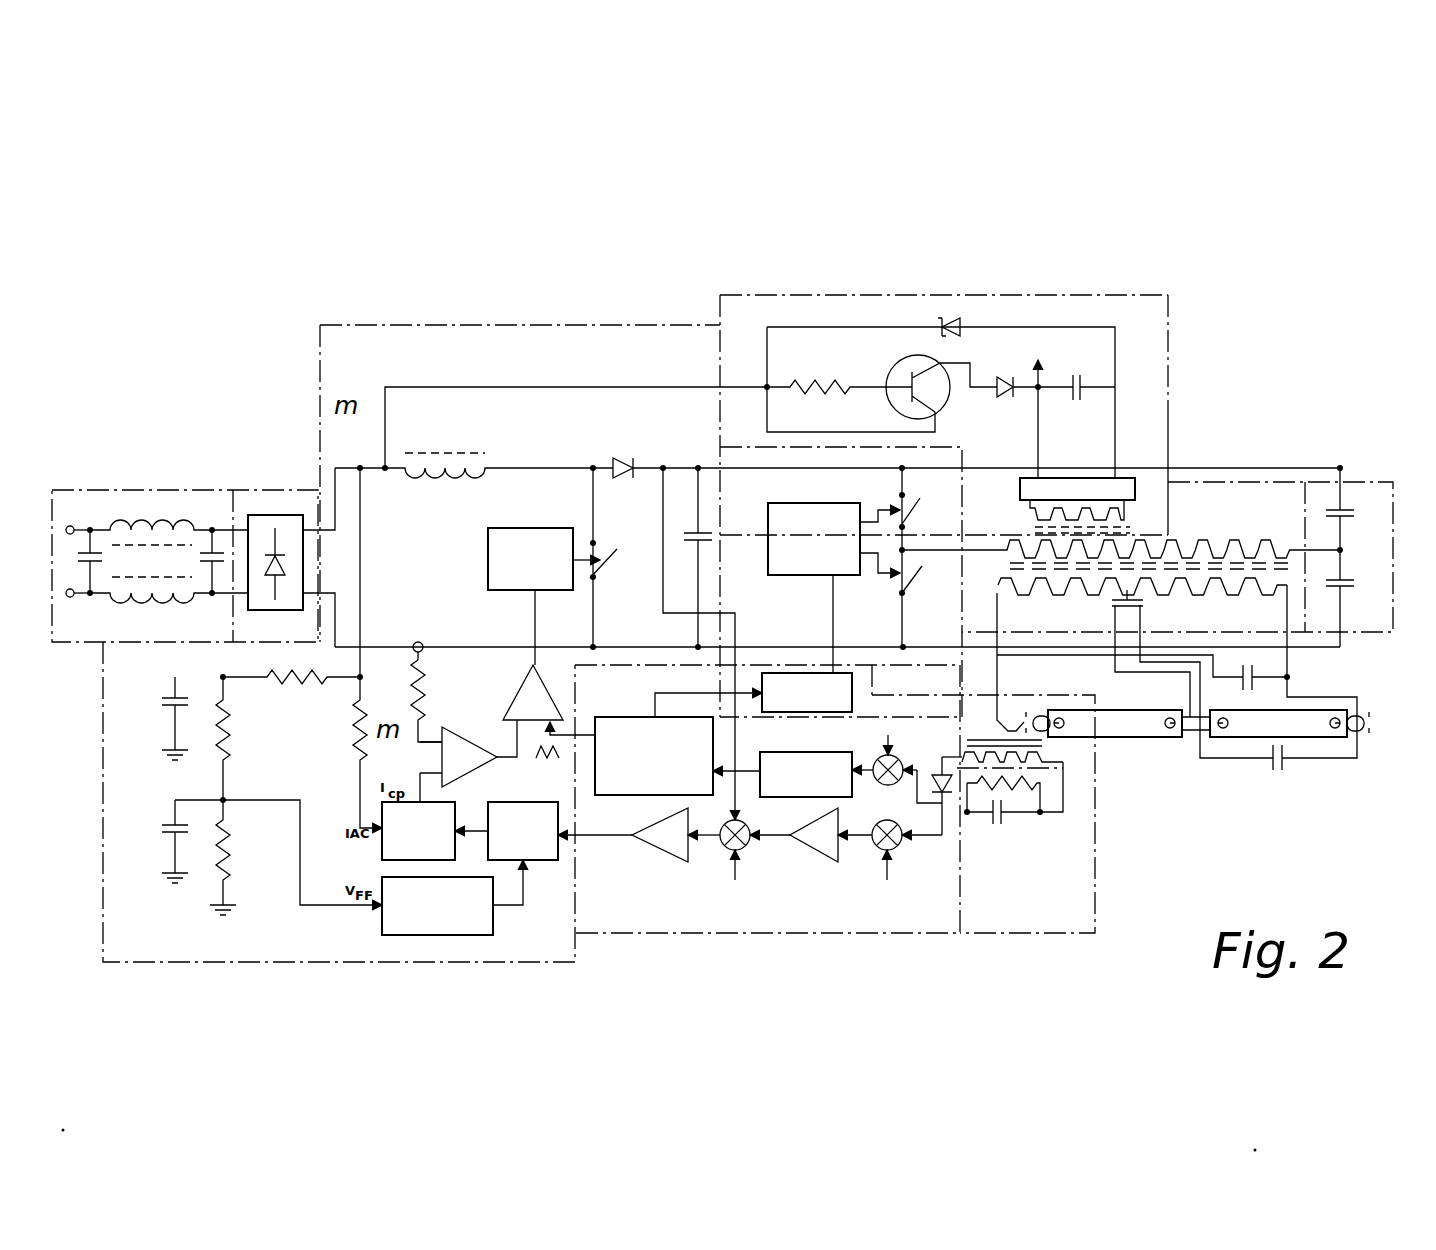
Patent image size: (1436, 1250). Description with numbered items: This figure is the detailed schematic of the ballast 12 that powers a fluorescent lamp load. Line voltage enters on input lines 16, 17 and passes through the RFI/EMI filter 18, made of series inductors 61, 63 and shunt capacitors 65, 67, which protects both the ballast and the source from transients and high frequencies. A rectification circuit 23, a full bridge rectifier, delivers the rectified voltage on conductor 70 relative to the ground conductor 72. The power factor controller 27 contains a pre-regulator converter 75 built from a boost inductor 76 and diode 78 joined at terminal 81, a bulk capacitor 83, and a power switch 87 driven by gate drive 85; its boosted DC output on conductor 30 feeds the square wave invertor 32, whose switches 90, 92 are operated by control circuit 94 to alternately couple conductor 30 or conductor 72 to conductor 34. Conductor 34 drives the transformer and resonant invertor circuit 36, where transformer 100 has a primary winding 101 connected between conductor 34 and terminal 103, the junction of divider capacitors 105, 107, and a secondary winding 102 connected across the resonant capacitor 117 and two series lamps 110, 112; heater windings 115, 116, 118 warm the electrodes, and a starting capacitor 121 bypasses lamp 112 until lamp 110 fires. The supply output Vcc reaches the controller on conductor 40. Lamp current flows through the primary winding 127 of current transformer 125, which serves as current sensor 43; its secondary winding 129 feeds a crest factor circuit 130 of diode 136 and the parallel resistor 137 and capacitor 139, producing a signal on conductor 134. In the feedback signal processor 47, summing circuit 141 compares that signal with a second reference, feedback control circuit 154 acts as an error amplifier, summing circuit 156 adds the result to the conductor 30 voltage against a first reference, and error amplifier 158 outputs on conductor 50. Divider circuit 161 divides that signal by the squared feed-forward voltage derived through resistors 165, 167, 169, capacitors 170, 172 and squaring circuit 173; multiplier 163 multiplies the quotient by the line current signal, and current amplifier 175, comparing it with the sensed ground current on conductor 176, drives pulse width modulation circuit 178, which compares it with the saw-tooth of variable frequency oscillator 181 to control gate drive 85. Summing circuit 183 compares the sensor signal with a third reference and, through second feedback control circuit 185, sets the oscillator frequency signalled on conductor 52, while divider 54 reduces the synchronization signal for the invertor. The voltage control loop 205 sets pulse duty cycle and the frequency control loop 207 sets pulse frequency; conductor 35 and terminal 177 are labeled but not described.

The ballast 12 is at (997, 286).
The input line 16 is at (80, 525).
The input line 17 is at (85, 605).
The filter 18 is at (140, 490).
The rectification circuit 23 is at (282, 515).
The power factor controller 27 is at (615, 325).
The conductor 30 is at (775, 470).
The square wave invertor 32 is at (950, 448).
The conductor 34 is at (918, 552).
The supply bus 35 is at (1170, 400).
The transformer and resonant invertor circuit 36 is at (1228, 482).
The conductor 40 is at (1043, 378).
The current sensor 43 is at (1085, 783).
The feedback signal processor 47 is at (1100, 846).
The conductor 50 is at (585, 838).
The conductor 52 is at (578, 722).
The divider 54 is at (794, 672).
The inductor 61 is at (150, 524).
The inductor 63 is at (170, 600).
The capacitor 65 is at (95, 568).
The capacitor 67 is at (215, 545).
The conductor 70 is at (338, 478).
The conductor 72 is at (382, 646).
The pre-regulator converter 75 is at (540, 428).
The inductor 76 is at (438, 478).
The diode 78 is at (636, 466).
The common terminal 81 is at (593, 467).
The bulk capacitor 83 is at (684, 537).
The gate drive 85 is at (488, 560).
The power switch 87 is at (610, 576).
The switch 90 is at (920, 512).
The switch 92 is at (924, 584).
The control circuit 94 is at (770, 528).
The transformer 100 is at (1185, 545).
The primary winding 101 is at (1200, 553).
The secondary winding 102 is at (1084, 590).
The terminal 103 is at (1344, 550).
The capacitor 105 is at (1346, 508).
The capacitor 107 is at (1346, 592).
The lamp 110 is at (1172, 710).
The lamp 112 is at (1250, 738).
The electrode heater winding 115 is at (1142, 608).
The electrode heater winding 116 is at (1037, 716).
The resonant capacitor 117 is at (1282, 664).
The electrode heater winding 118 is at (1372, 715).
The starting capacitor 121 is at (1288, 766).
The current transformer 125 is at (1050, 740).
The primary winding 127 is at (1000, 728).
The secondary winding 129 is at (963, 758).
The crest factor circuit 130 is at (990, 845).
The conductor 134 is at (917, 804).
The diode 136 is at (950, 800).
The resistor 137 is at (1035, 815).
The capacitor 139 is at (1005, 830).
The summing circuit 141 is at (906, 842).
The feedback control circuit 154 is at (798, 848).
The summing circuit 156 is at (726, 856).
The error amplifier 158 is at (660, 860).
The divider circuit 161 is at (543, 862).
The multiplier 163 is at (460, 805).
The resistor 165 is at (233, 840).
The resistor 167 is at (232, 738).
The resistor 169 is at (292, 686).
The capacitor 170 is at (165, 712).
The capacitor 172 is at (165, 848).
The squaring circuit 173 is at (382, 934).
The current amplifier 175 is at (352, 745).
The conductor 176 is at (410, 700).
The sense terminal 177 is at (430, 660).
The pulse width modulation circuit 178 is at (511, 702).
The variable frequency oscillator 181 is at (648, 798).
The summing circuit 183 is at (879, 757).
The second feedback control circuit 185 is at (805, 752).
The voltage control loop 205 is at (1047, 876).
The frequency control loop 207 is at (892, 702).